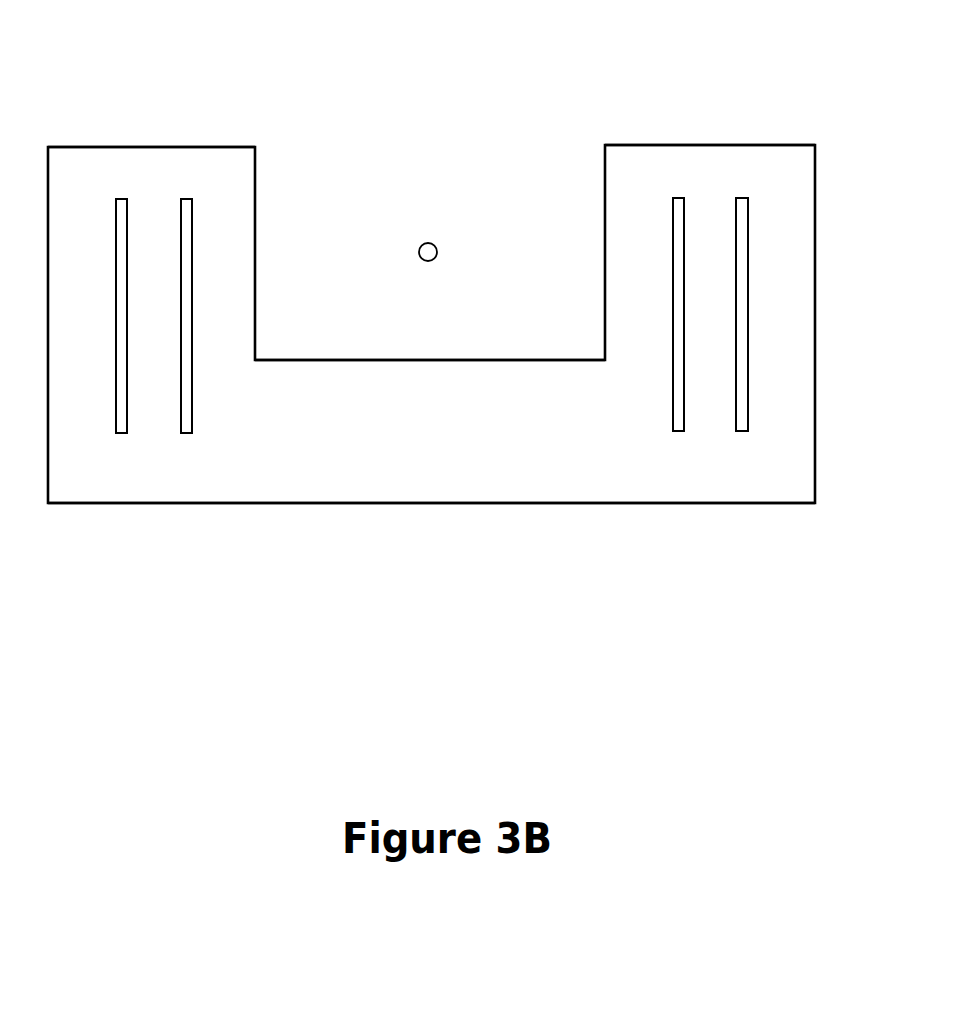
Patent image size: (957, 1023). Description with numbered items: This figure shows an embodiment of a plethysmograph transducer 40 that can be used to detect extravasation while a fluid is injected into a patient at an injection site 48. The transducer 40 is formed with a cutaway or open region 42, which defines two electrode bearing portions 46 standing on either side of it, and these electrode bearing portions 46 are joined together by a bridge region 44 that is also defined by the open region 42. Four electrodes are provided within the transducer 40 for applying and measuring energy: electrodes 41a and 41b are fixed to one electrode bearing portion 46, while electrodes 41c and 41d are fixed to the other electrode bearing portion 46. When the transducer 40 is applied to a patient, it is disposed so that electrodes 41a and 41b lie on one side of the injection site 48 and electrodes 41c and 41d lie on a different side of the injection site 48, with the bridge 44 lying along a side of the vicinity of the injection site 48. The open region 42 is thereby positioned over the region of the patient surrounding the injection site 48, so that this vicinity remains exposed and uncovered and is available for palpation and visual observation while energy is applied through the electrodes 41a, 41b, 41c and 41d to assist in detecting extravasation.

The plethysmograph transducer 40 is at (234, 538).
The electrode 41a is at (113, 322).
The electrode 41b is at (178, 357).
The electrode 41c is at (672, 312).
The electrode 41d is at (735, 363).
The open region 42 is at (370, 207).
The bridge region 44 is at (408, 503).
The electrode bearing portion 46 is at (152, 147).
The injection site 48 is at (438, 252).